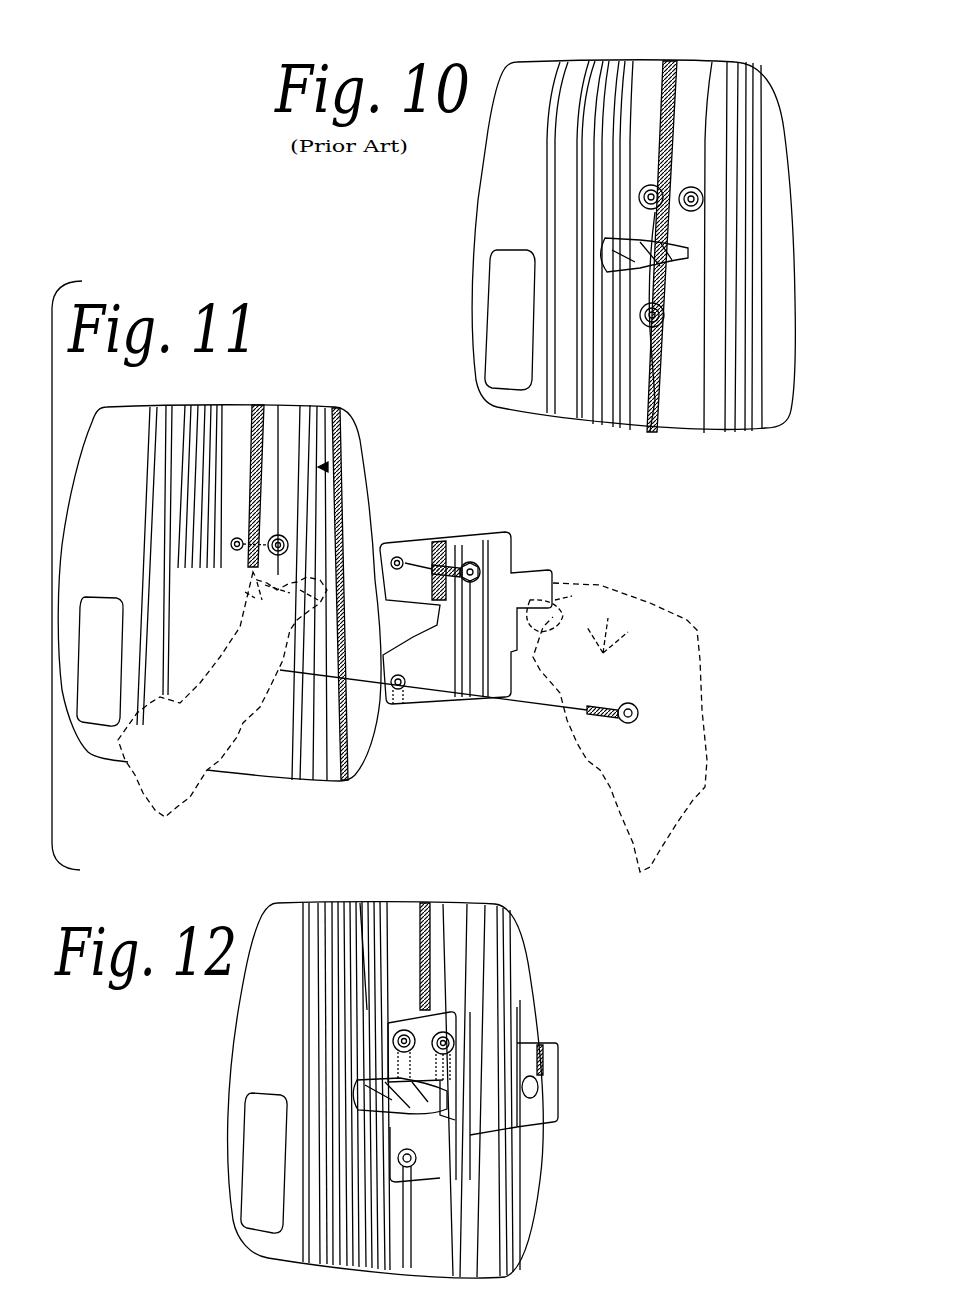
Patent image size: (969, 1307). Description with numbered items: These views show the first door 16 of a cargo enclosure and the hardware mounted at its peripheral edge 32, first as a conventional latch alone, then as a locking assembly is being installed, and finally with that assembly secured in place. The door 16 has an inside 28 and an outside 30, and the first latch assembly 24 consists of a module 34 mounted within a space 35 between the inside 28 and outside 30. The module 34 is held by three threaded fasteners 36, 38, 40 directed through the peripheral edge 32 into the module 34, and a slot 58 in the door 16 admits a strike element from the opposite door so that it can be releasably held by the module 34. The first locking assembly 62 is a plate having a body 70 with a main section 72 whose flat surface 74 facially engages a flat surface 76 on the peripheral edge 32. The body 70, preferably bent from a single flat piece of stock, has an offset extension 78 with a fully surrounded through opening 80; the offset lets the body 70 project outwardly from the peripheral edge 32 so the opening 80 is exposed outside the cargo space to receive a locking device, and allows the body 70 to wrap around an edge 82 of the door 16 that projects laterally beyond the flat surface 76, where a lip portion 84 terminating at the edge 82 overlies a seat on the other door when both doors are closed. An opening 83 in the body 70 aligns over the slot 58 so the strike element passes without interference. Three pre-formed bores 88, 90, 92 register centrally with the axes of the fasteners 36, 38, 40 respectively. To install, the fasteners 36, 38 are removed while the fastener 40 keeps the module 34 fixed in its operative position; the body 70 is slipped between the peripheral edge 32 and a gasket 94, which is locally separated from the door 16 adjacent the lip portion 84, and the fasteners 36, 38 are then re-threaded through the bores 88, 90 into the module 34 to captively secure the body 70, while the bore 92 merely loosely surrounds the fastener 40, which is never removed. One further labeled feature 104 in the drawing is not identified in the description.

In FIG. 10, the first door 16 is at (527, 90).
In FIG. 11, the first door 16 is at (113, 432).
In FIG. 12, the first door 16 is at (288, 930).
In FIG. 10, the first latch assembly 24 is at (655, 265).
In FIG. 12, the first latch assembly 24 is at (333, 1010).
In FIG. 12, the inside 28 is at (258, 1002).
In FIG. 10, the outside 30 is at (766, 223).
In FIG. 10, the peripheral edge 32 is at (645, 176).
In FIG. 11, the peripheral edge 32 is at (234, 437).
In FIG. 12, the peripheral edge 32 is at (433, 1223).
In FIG. 12, the module 34 is at (358, 1085).
In FIG. 10, the space 35 is at (645, 100).
In FIG. 10, the fastener 36 is at (660, 232).
In FIG. 11, the fastener 36 is at (458, 697).
In FIG. 12, the fastener 36 is at (372, 1010).
In FIG. 10, the fastener 38 is at (657, 325).
In FIG. 11, the fastener 38 is at (625, 722).
In FIG. 12, the fastener 38 is at (390, 1170).
In FIG. 10, the fastener 40 is at (695, 190).
In FIG. 11, the fastener 40 is at (274, 538).
In FIG. 12, the fastener 40 is at (447, 1038).
In FIG. 10, the slot 58 is at (700, 197).
In FIG. 11, the first locking assembly 62 is at (515, 560).
In FIG. 12, the first locking assembly 62 is at (510, 1110).
In FIG. 11, the body 70 is at (477, 543).
In FIG. 12, the body 70 is at (437, 1157).
In FIG. 11, the main section 72 is at (413, 550).
In FIG. 12, the main section 72 is at (405, 1030).
In FIG. 11, the flat surface 74 is at (377, 663).
In FIG. 12, the flat surface 74 is at (393, 1117).
In FIG. 11, the flat surface 76 is at (273, 463).
In FIG. 12, the flat surface 76 is at (440, 943).
In FIG. 11, the offset extension 78 is at (547, 571).
In FIG. 12, the offset extension 78 is at (556, 1048).
In FIG. 11, the through opening/bore 80 is at (548, 608).
In FIG. 12, the through opening/bore 80 is at (536, 1086).
In FIG. 11, the edge 82 is at (327, 467).
In FIG. 12, the edge 82 is at (450, 1010).
In FIG. 11, the opening 83 is at (432, 697).
In FIG. 12, the opening 83 is at (453, 1053).
In FIG. 11, the lip portion 84 is at (367, 442).
In FIG. 11, the opening/bore 88 is at (397, 556).
In FIG. 11, the opening/bore 90 is at (392, 704).
In FIG. 11, the opening/bore 92 is at (435, 568).
In FIG. 12, the opening/bore 92 is at (443, 1030).
In FIG. 11, the gasket 94 is at (330, 420).
In FIG. 11, the upper flange 104 is at (497, 540).